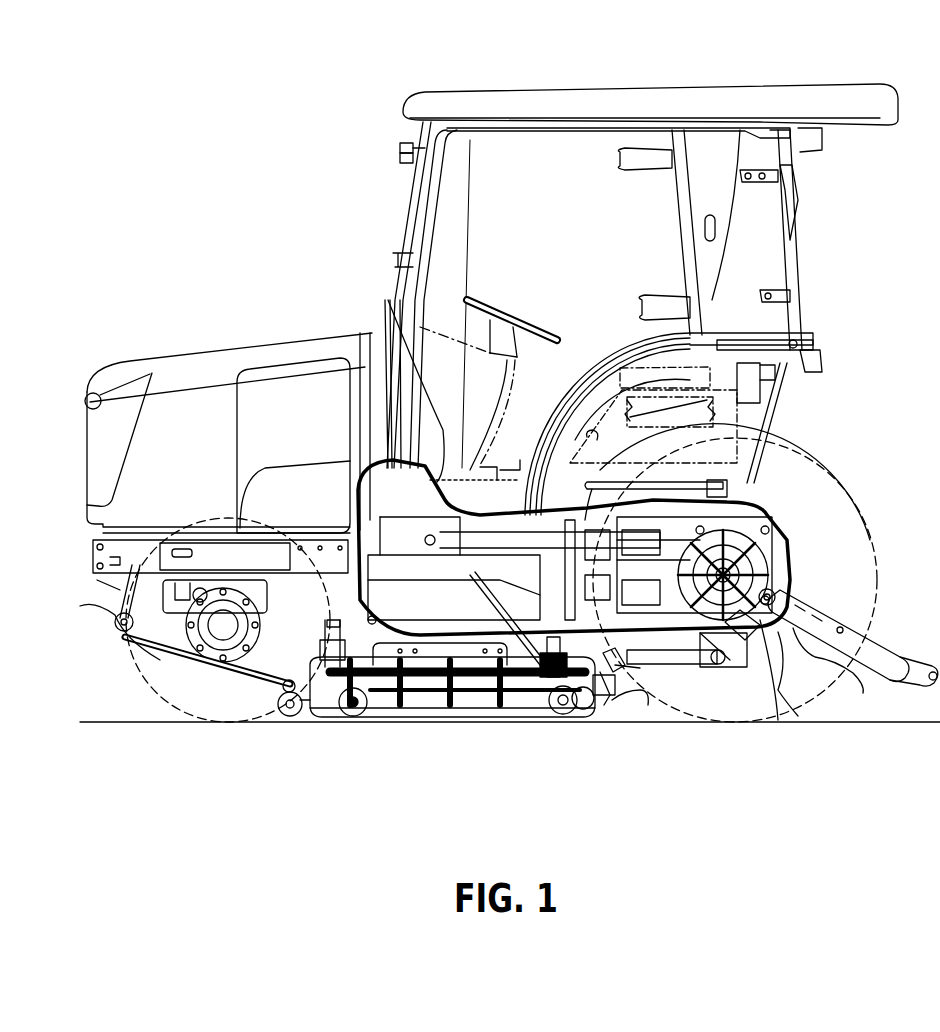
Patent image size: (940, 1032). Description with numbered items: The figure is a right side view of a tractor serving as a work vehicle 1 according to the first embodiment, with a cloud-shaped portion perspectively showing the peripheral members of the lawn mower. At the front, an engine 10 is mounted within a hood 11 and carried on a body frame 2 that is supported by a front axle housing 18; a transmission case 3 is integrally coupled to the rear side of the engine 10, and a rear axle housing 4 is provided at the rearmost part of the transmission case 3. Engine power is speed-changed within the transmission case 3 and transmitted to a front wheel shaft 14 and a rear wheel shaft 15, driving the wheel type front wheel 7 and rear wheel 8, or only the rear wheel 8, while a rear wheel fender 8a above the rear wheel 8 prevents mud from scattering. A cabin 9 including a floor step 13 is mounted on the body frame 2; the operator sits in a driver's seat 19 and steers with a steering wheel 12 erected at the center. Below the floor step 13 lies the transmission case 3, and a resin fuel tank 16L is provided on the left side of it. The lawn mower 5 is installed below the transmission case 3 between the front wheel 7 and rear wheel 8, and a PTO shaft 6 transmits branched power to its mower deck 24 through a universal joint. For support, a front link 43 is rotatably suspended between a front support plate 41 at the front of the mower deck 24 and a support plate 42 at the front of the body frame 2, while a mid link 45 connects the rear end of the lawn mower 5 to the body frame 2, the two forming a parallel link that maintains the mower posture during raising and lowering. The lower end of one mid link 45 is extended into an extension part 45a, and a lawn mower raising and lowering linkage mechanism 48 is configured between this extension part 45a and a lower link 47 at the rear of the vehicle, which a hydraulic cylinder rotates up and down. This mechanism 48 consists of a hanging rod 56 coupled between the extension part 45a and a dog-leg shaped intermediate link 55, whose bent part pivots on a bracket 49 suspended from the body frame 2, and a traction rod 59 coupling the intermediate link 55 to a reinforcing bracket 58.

The tractor 1 is at (882, 222).
The body frame 2 is at (110, 546).
The transmission case 3 is at (405, 315).
The rear axle housing 4 is at (763, 540).
The lawn mower 5 is at (470, 728).
The PTO shaft 6 is at (674, 690).
The front wheel 7 is at (198, 718).
The rear wheel 8 is at (795, 700).
The rear wheel fender 8a is at (797, 368).
The cabin 9 is at (512, 160).
The engine 10 is at (270, 365).
The hood 11 is at (197, 365).
The steering wheel 12 is at (513, 300).
The floor step 13 is at (512, 470).
The front wheel shaft 14 is at (262, 660).
The rear wheel shaft 15 is at (725, 573).
The fuel tank 16L is at (372, 345).
The front axle housing 18 is at (180, 690).
The driver's seat 19 is at (735, 128).
The mower deck 24 is at (376, 715).
The front support plate 41 is at (292, 712).
The support plate 42 is at (115, 612).
The front link 43 is at (152, 664).
The mid link 45 is at (508, 705).
The extension part 45a is at (598, 715).
The lower link 47 is at (873, 642).
The lawn mower raising and lowering linkage mechanism 48 is at (743, 678).
The bracket 49 is at (730, 690).
The intermediate link 55 is at (647, 705).
The hanging rod 56 is at (612, 700).
The bracket 58 is at (840, 667).
The traction rod 59 is at (780, 720).